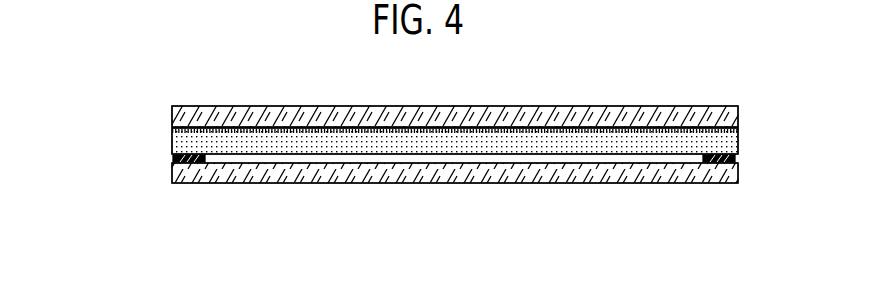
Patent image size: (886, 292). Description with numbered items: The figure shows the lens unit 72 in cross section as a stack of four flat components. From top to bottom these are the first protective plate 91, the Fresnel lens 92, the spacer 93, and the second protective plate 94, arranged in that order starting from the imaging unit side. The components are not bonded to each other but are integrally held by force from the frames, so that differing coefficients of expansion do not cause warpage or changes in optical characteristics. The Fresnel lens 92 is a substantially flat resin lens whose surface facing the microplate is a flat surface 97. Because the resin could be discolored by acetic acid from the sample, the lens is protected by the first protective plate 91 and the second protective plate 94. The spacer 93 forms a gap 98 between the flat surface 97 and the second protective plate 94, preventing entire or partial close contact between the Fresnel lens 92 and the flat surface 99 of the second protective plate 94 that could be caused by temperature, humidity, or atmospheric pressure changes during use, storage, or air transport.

The lens unit 72 is at (433, 157).
The first protective plate 91 is at (172, 119).
The Fresnel lens 92 is at (172, 143).
The spacer 93 is at (173, 158).
The second protective plate 94 is at (409, 192).
The flat surface 97 is at (536, 158).
The gap 98 is at (441, 160).
The flat surface of the second protective plate 99 is at (500, 155).